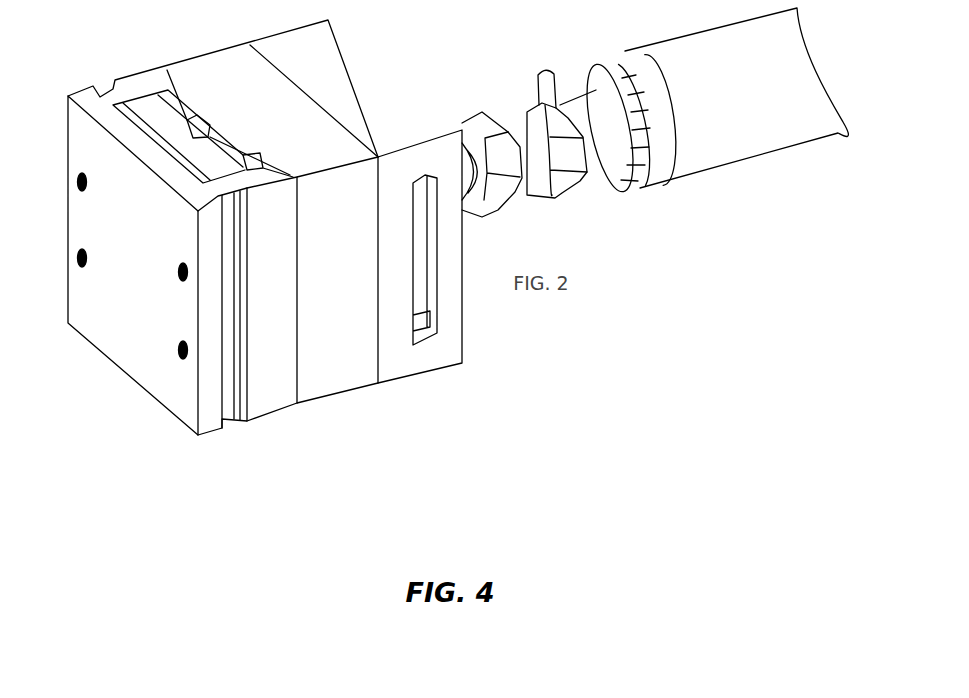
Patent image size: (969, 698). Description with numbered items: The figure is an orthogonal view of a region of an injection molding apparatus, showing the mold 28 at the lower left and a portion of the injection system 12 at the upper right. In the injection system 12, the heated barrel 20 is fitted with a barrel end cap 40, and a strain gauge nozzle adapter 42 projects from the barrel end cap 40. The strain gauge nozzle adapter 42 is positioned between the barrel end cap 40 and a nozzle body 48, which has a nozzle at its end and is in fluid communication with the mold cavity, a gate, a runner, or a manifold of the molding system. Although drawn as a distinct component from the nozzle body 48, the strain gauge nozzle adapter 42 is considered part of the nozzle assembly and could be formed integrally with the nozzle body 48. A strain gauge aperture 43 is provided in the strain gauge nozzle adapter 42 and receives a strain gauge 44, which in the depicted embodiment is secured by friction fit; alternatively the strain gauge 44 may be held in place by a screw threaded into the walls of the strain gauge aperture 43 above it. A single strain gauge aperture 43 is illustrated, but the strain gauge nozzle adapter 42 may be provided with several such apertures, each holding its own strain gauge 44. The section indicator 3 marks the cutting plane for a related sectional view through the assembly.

The injection system 12 is at (495, 313).
The heated barrel 20 is at (728, 135).
The mold 28 is at (195, 458).
The barrel end cap 40 is at (648, 56).
The strain gauge nozzle adapter 42 is at (541, 192).
The strain gauge aperture 43 is at (546, 107).
The strain gauge 44 is at (547, 79).
The nozzle body 48 is at (482, 124).
The section line 3- 3 is at (133, 260).